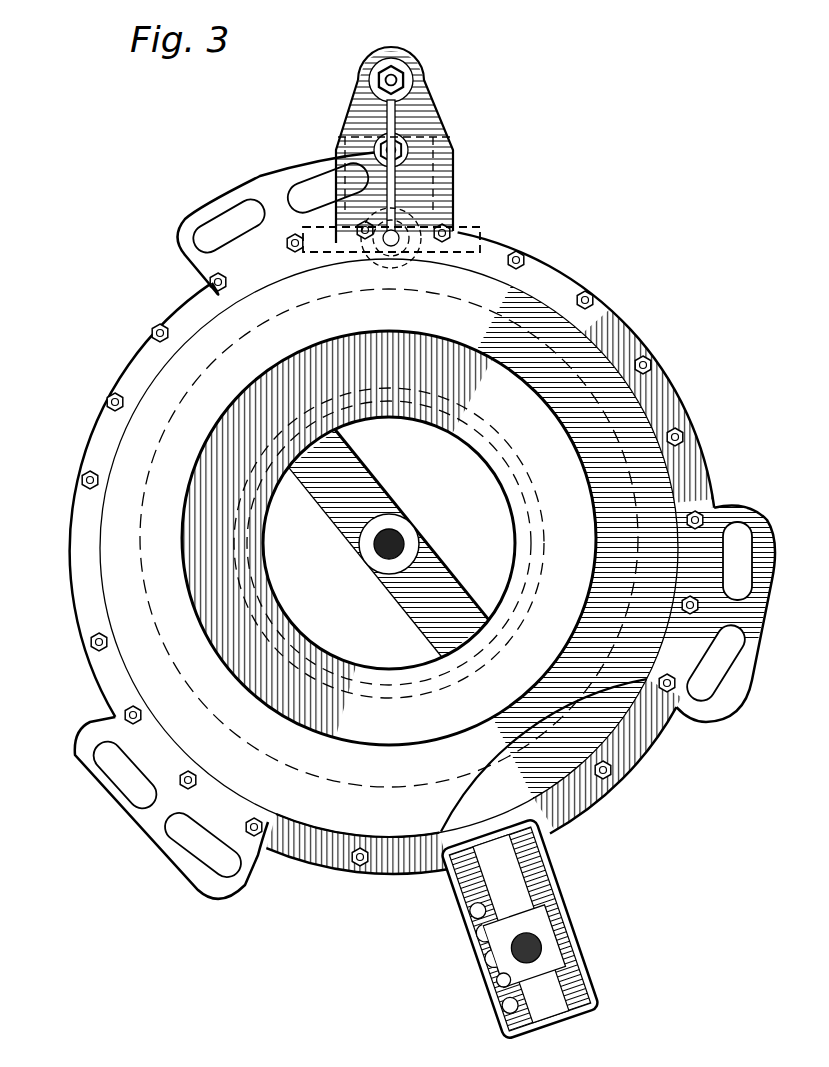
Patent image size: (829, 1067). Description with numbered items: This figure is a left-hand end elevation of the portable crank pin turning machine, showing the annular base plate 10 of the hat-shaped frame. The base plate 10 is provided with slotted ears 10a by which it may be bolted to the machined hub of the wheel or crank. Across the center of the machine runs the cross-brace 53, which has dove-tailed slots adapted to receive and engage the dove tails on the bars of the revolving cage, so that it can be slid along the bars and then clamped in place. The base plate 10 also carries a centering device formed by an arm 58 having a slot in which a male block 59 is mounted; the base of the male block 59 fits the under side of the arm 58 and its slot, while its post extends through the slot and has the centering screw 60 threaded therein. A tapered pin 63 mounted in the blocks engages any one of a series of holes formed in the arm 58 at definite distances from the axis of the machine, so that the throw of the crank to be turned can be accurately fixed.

The base plate 10 is at (75, 596).
The slotted ears 10a is at (283, 180).
The cross-brace 53 is at (362, 478).
The arm 58 is at (580, 923).
The male block 59 is at (520, 977).
The centering screw 60 is at (545, 952).
The tapered pin 63 is at (500, 978).